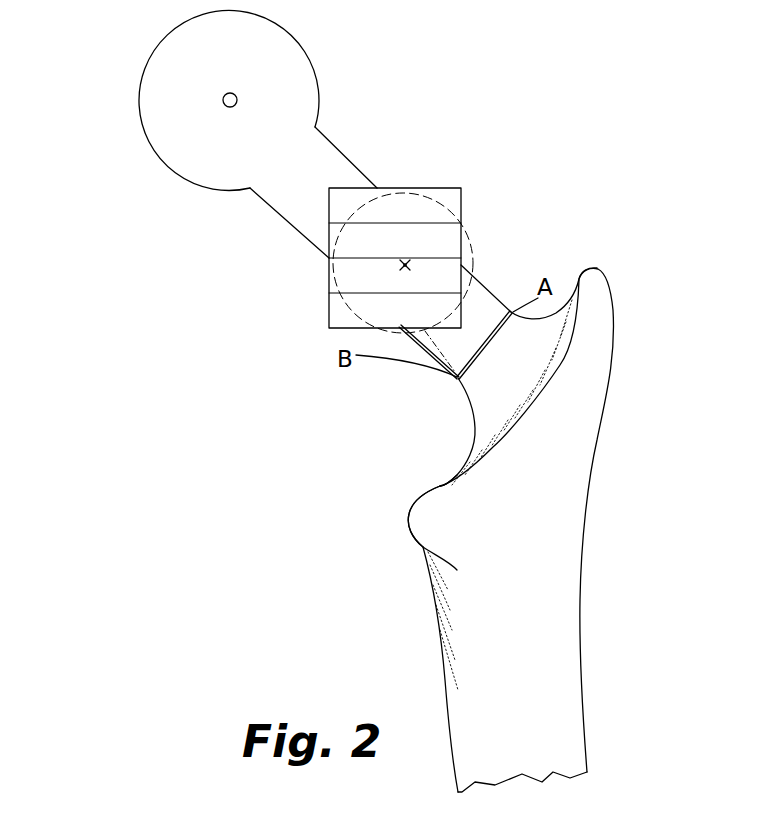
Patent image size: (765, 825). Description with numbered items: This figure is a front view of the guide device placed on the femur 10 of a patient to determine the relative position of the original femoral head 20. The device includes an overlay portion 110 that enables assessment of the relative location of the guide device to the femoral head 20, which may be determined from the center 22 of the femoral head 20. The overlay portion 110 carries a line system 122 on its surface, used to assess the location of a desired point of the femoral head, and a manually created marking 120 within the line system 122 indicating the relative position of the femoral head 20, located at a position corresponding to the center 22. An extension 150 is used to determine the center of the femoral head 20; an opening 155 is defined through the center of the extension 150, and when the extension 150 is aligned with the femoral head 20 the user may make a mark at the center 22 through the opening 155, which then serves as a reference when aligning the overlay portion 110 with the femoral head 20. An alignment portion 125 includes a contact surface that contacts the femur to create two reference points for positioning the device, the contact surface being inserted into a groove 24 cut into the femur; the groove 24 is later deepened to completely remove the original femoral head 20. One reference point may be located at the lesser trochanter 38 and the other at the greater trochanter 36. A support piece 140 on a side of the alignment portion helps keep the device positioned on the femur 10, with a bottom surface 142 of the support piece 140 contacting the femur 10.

The femur 10 is at (380, 600).
The original femoral head 20 is at (367, 235).
The center of the femoral head 22 is at (402, 267).
The groove 24 is at (505, 302).
The greater trochanter 36 is at (578, 294).
The lesser trochanter 38 is at (465, 460).
The overlay portion 110 is at (450, 198).
The marking 120 is at (421, 257).
The line system 122 is at (449, 217).
The alignment portion 125 is at (489, 284).
The support piece 140 is at (463, 388).
The bottom surface 142 is at (470, 410).
The extension 150 is at (180, 80).
The opening 155 is at (237, 91).